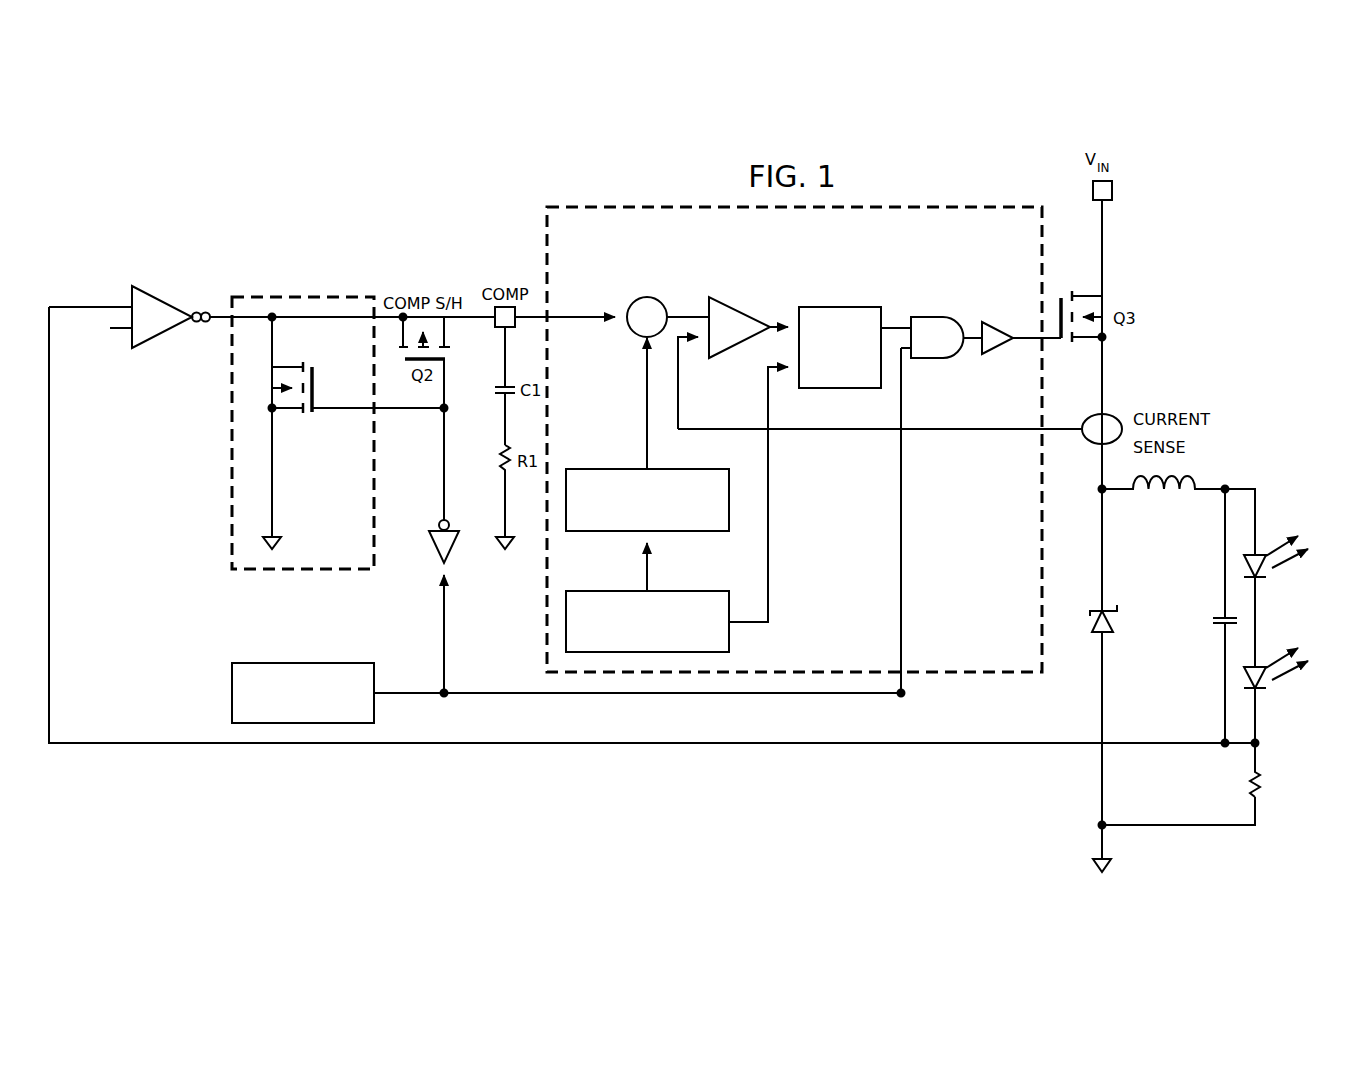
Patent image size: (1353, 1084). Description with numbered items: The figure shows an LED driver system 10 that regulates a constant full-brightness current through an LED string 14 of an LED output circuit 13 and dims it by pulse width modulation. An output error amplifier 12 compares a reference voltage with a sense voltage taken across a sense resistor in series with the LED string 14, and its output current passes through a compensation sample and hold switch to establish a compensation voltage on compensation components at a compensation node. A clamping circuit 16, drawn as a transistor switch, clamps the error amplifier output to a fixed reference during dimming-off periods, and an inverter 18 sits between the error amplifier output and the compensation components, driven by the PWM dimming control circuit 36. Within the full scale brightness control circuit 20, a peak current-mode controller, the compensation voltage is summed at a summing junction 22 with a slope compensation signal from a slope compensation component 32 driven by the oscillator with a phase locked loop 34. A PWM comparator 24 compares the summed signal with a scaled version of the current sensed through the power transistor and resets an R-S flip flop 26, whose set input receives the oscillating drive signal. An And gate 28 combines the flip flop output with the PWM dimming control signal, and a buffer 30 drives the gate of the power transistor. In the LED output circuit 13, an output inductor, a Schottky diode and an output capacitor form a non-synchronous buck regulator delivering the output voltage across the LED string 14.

The LED driver system 10 is at (440, 184).
The output error amplifier 12 is at (162, 298).
The LED output circuit 13 is at (1258, 437).
The LED string 14 is at (1280, 516).
The clamping circuit 16 is at (288, 296).
The inverter 18 is at (433, 543).
The full scale brightness control circuit 20 is at (959, 613).
The summer 22 is at (634, 303).
The PWM comparator 24 is at (740, 311).
The R-S flip flop 26 is at (853, 304).
The And gate 28 is at (932, 316).
The buffer 30 is at (1000, 322).
The slope compensation component 32 is at (618, 532).
The oscillator with a phase locked loop 34 is at (680, 591).
The PWM dimming control circuit 36 is at (232, 705).